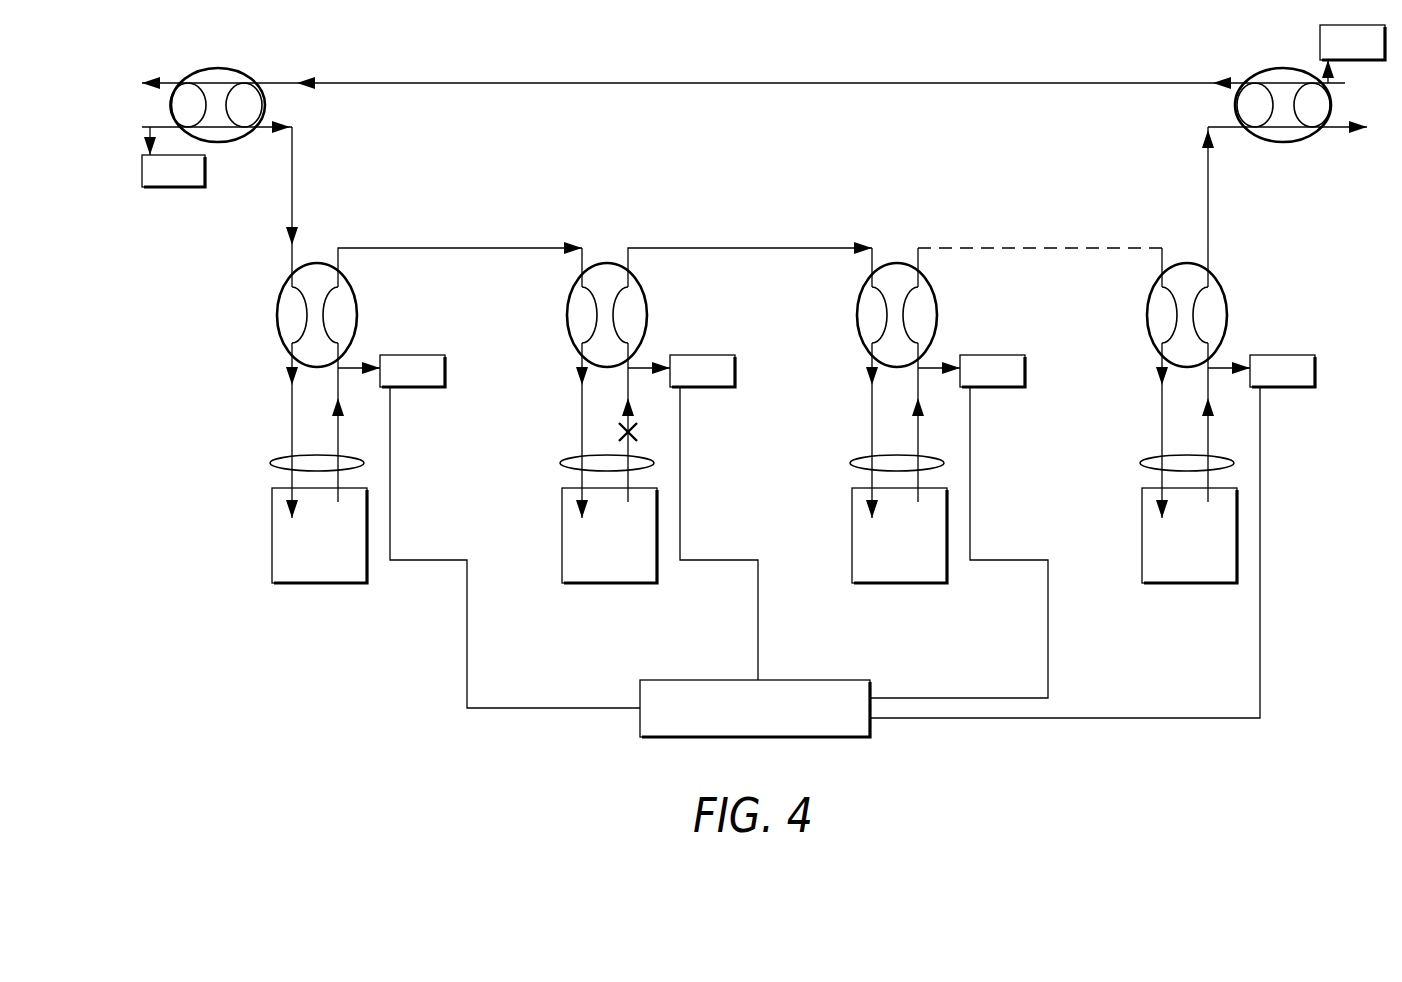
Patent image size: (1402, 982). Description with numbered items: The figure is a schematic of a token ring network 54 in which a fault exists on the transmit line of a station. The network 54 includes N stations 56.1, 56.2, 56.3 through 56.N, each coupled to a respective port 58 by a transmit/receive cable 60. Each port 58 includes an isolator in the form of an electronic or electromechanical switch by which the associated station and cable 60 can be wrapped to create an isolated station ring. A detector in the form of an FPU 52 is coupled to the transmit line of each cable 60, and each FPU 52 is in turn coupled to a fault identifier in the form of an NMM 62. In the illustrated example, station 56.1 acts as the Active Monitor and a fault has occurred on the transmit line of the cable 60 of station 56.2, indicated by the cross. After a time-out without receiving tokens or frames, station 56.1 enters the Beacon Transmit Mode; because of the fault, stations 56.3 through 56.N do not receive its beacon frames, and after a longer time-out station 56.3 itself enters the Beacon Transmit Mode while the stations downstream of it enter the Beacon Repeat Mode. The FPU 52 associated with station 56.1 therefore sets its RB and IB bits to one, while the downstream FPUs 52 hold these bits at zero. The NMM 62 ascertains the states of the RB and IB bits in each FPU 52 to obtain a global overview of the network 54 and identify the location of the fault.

The FPU 52 is at (408, 355).
The token ring network 54 is at (370, 733).
The station 56.1 is at (272, 512).
The station 56.2 is at (562, 512).
The station 56.3 is at (852, 512).
The station 56.N is at (1142, 512).
The port 58 is at (277, 327).
The transmit/receive cable 60 is at (280, 460).
The NMM 62 is at (640, 693).